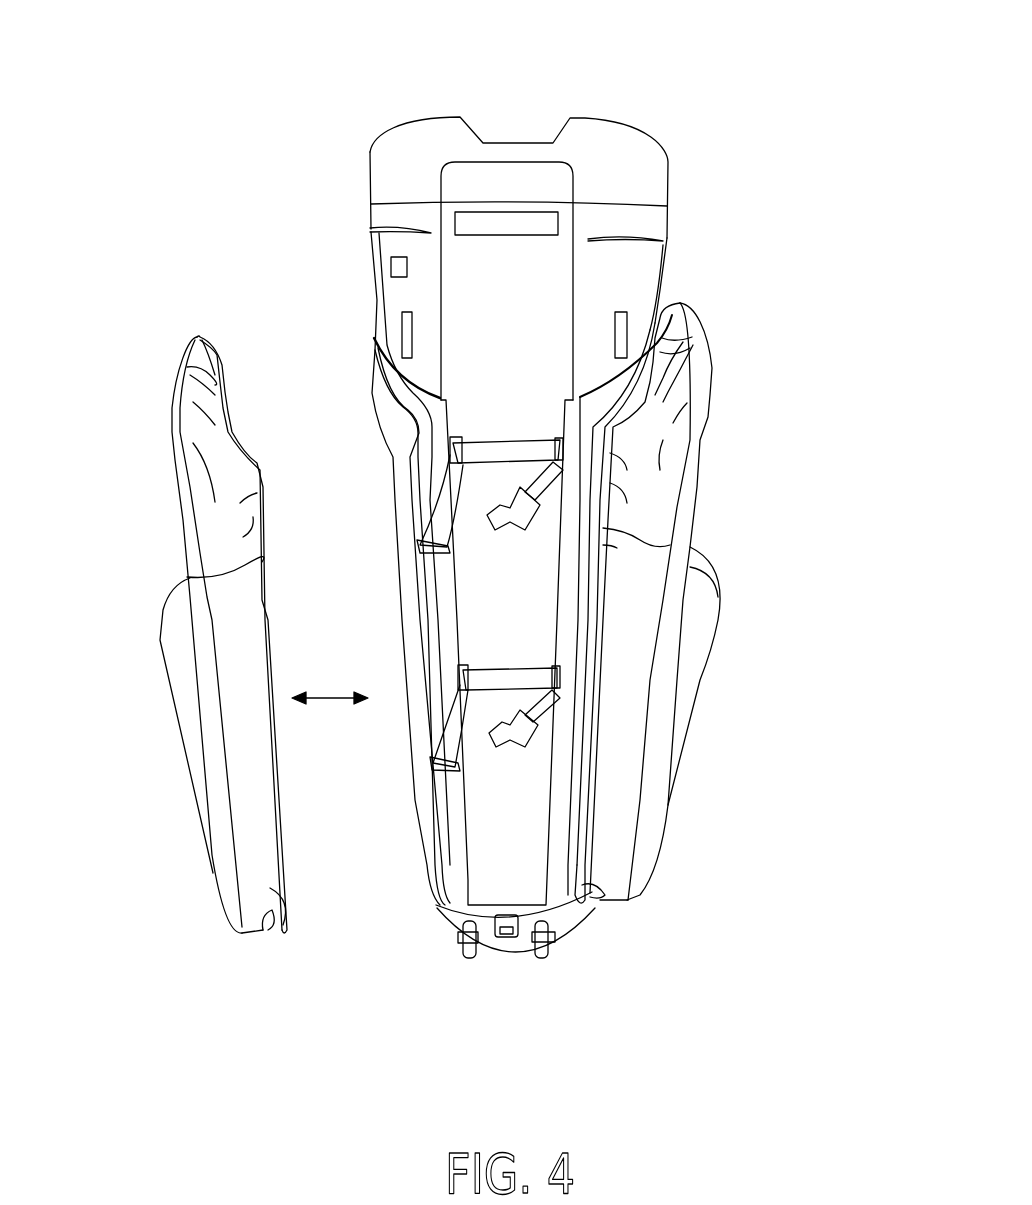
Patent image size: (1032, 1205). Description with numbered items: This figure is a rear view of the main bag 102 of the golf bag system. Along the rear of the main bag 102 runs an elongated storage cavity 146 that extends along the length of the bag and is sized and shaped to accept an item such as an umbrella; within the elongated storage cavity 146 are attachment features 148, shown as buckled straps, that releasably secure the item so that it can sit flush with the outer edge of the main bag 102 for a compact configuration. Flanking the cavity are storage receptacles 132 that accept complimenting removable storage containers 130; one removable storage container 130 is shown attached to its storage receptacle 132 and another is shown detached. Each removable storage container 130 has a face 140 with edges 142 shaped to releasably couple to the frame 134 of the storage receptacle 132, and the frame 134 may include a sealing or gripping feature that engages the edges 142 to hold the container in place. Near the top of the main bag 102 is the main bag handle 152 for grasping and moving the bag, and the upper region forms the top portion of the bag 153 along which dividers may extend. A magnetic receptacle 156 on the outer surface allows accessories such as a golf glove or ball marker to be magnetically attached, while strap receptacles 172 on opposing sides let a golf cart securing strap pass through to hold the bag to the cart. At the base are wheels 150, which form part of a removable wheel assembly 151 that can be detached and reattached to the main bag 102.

The main bag 102 is at (459, 509).
The top portion of the bag 153 is at (370, 165).
The main bag handle 152 is at (515, 225).
The magnetic receptacle 156 is at (390, 267).
The strap receptacles 172 is at (405, 335).
The elongated storage cavity 146 is at (510, 322).
The frame 134 is at (415, 422).
The face 140 is at (218, 848).
The attachment features 148 is at (435, 518).
The storage receptacle 132 is at (422, 612).
The removable storage container 130 is at (233, 693).
The edges 142 is at (283, 890).
The removable wheel assembly 151 is at (552, 932).
The wheels 150 is at (542, 950).